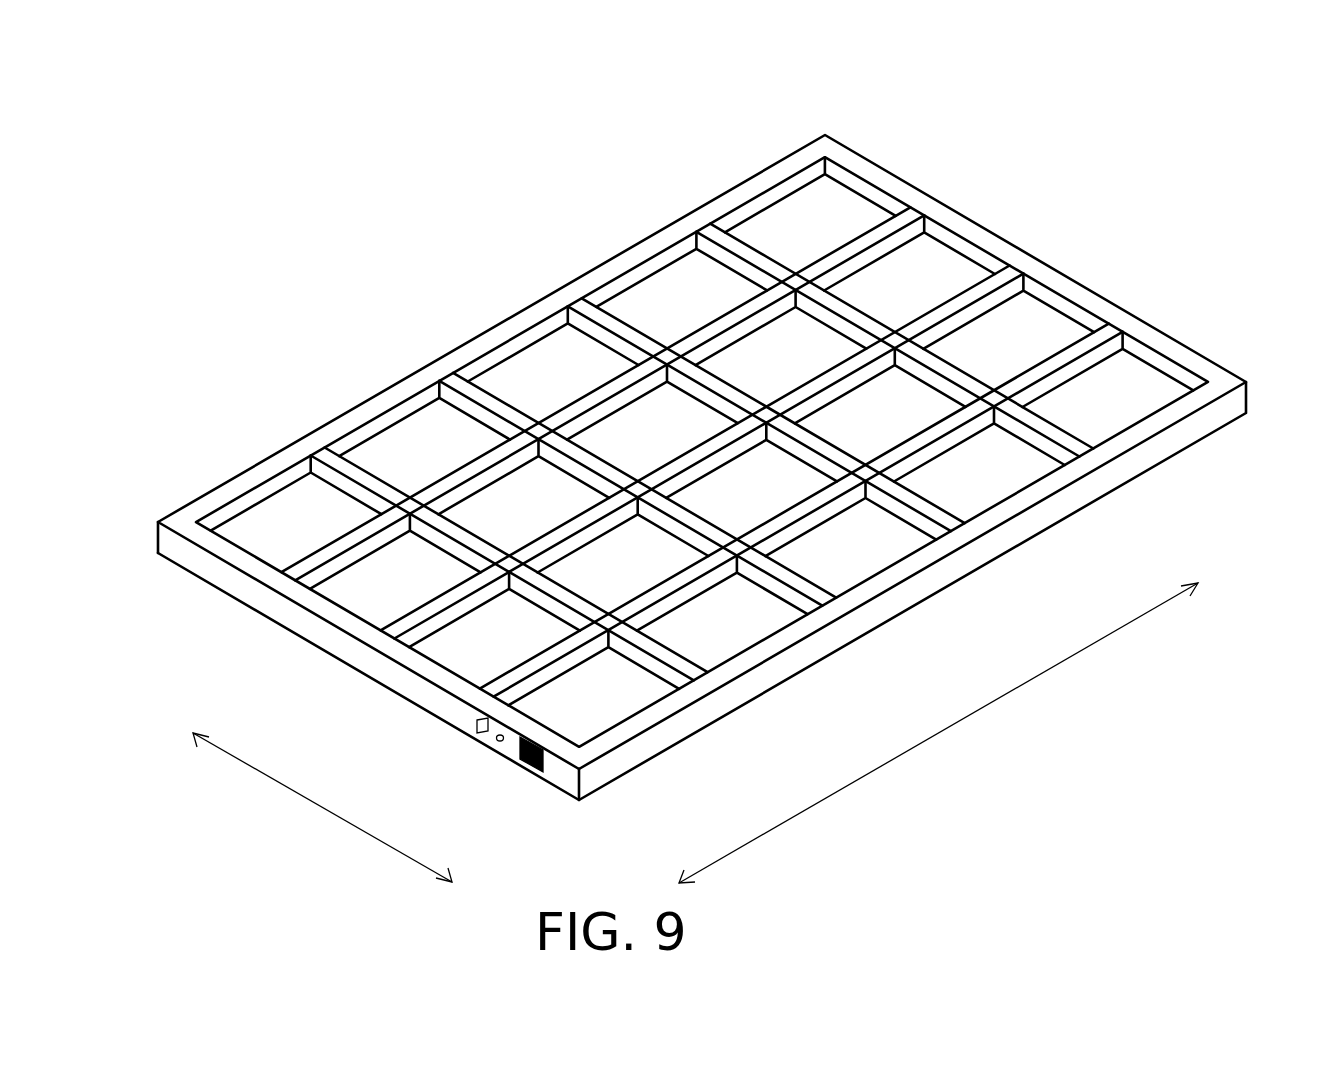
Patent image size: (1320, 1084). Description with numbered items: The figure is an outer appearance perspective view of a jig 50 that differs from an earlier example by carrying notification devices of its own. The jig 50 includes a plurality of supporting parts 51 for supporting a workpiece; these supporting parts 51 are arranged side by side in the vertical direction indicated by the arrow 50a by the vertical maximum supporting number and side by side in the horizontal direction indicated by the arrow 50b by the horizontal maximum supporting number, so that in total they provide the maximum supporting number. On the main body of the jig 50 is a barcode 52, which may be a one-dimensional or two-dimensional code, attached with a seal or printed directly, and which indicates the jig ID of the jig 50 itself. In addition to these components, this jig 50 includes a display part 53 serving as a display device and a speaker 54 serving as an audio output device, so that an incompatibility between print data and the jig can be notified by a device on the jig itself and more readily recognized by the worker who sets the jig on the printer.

The jig 50 is at (702, 421).
The supporting parts 51 is at (518, 333).
The barcode 52 is at (522, 762).
The display part 53 is at (474, 732).
The speaker 54 is at (497, 742).
The arrow indicating vertical direction 50a is at (952, 725).
The arrow indicating horizontal direction 50b is at (310, 800).